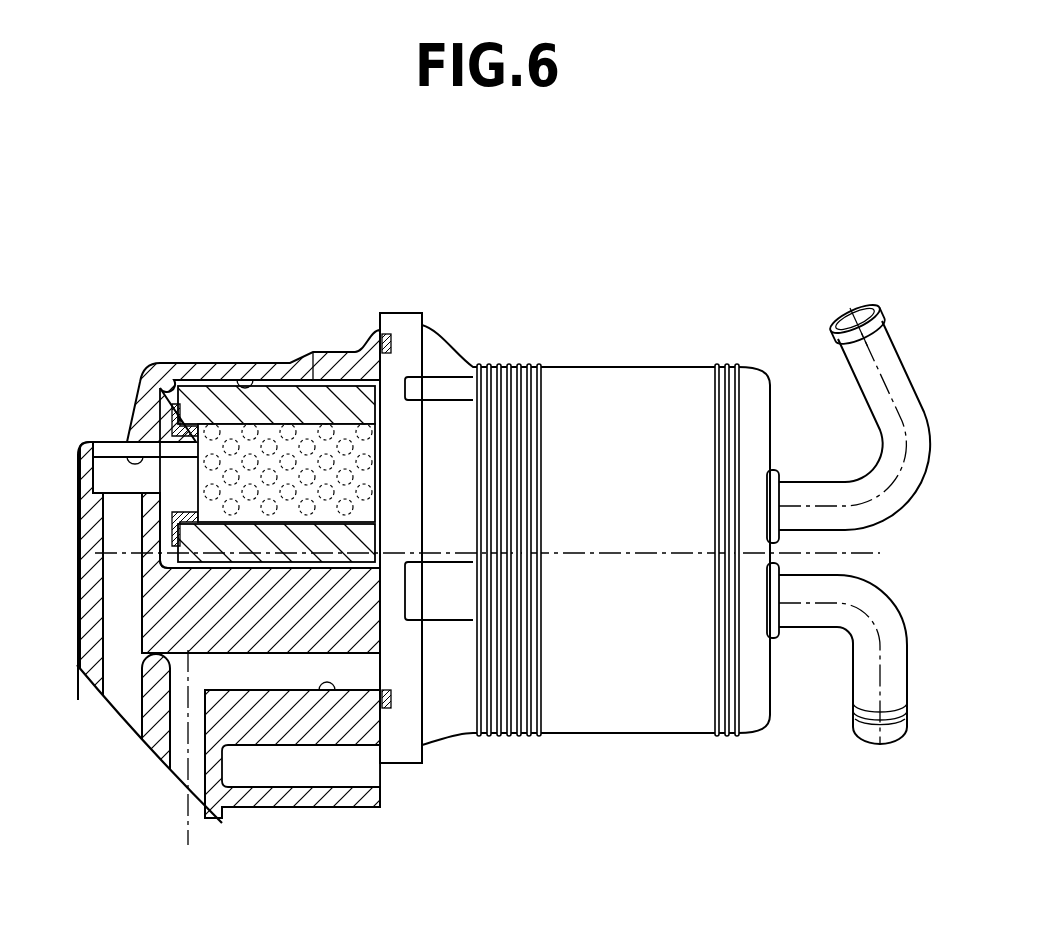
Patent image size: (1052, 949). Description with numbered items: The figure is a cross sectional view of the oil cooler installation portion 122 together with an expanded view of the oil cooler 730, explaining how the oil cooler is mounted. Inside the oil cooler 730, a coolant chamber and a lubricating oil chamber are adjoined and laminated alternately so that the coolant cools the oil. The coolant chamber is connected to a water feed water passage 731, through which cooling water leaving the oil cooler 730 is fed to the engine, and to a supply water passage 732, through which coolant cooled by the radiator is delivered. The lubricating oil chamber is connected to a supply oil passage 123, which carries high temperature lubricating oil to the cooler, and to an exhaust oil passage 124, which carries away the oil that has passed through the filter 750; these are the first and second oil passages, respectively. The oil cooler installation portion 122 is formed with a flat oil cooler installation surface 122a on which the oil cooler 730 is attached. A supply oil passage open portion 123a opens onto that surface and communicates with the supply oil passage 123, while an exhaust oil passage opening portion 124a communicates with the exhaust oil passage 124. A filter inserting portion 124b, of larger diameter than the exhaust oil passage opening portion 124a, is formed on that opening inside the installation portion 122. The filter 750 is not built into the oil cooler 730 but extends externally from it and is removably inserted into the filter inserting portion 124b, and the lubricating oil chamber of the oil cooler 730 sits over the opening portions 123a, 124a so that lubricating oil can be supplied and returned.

The oil cooler installation portion 122 is at (198, 362).
The oil cooler installation surface 122a is at (380, 800).
The supply oil passage 123 is at (178, 760).
The supply oil passage open portion 123a is at (327, 692).
The exhaust oil passage 124 is at (102, 655).
The exhaust oil passage opening portion 124a is at (125, 450).
The filter inserting portion 124b is at (245, 384).
The filter 750 is at (270, 432).
The oil cooler 730 is at (582, 355).
The water feed water passage 731 is at (893, 330).
The supply water passage 732 is at (906, 695).